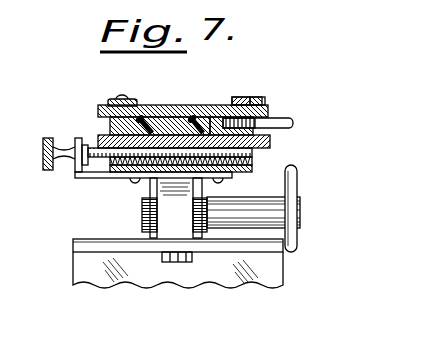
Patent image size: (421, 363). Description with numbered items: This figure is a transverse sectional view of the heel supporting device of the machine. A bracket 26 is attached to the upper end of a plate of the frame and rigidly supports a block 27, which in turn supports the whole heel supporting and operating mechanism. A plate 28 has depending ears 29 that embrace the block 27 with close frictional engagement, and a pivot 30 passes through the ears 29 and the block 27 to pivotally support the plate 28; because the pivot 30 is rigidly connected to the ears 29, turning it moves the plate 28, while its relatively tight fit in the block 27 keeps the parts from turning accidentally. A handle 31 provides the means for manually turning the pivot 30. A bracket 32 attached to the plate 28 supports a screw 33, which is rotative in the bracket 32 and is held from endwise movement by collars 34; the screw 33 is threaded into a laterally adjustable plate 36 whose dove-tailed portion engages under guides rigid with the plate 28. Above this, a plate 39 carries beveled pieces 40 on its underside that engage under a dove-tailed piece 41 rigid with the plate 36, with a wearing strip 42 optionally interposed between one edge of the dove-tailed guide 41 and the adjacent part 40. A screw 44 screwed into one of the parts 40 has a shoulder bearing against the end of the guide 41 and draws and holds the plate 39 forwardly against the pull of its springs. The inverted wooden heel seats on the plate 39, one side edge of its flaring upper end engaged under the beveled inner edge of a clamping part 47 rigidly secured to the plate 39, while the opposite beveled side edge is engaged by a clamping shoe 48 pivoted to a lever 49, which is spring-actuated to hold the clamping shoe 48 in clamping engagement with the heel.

The bracket 26 is at (210, 267).
The block 27 is at (177, 223).
The plate 28 is at (122, 168).
The ears 29 is at (150, 230).
The pivot 30 is at (290, 205).
The handle 31 is at (299, 246).
The bracket 32 is at (92, 174).
The screw 33 is at (45, 162).
The collars 34 is at (73, 157).
The laterally adjustable plate 36 is at (270, 143).
The plate 39 is at (152, 107).
The beveled pieces 40 is at (110, 122).
The dove-tailed piece 41 is at (196, 112).
The wearing strip 42 is at (218, 107).
The screw 44 is at (142, 118).
The clamping part 47 is at (115, 100).
The clamping shoe 48 is at (236, 98).
The lever 49 is at (262, 101).